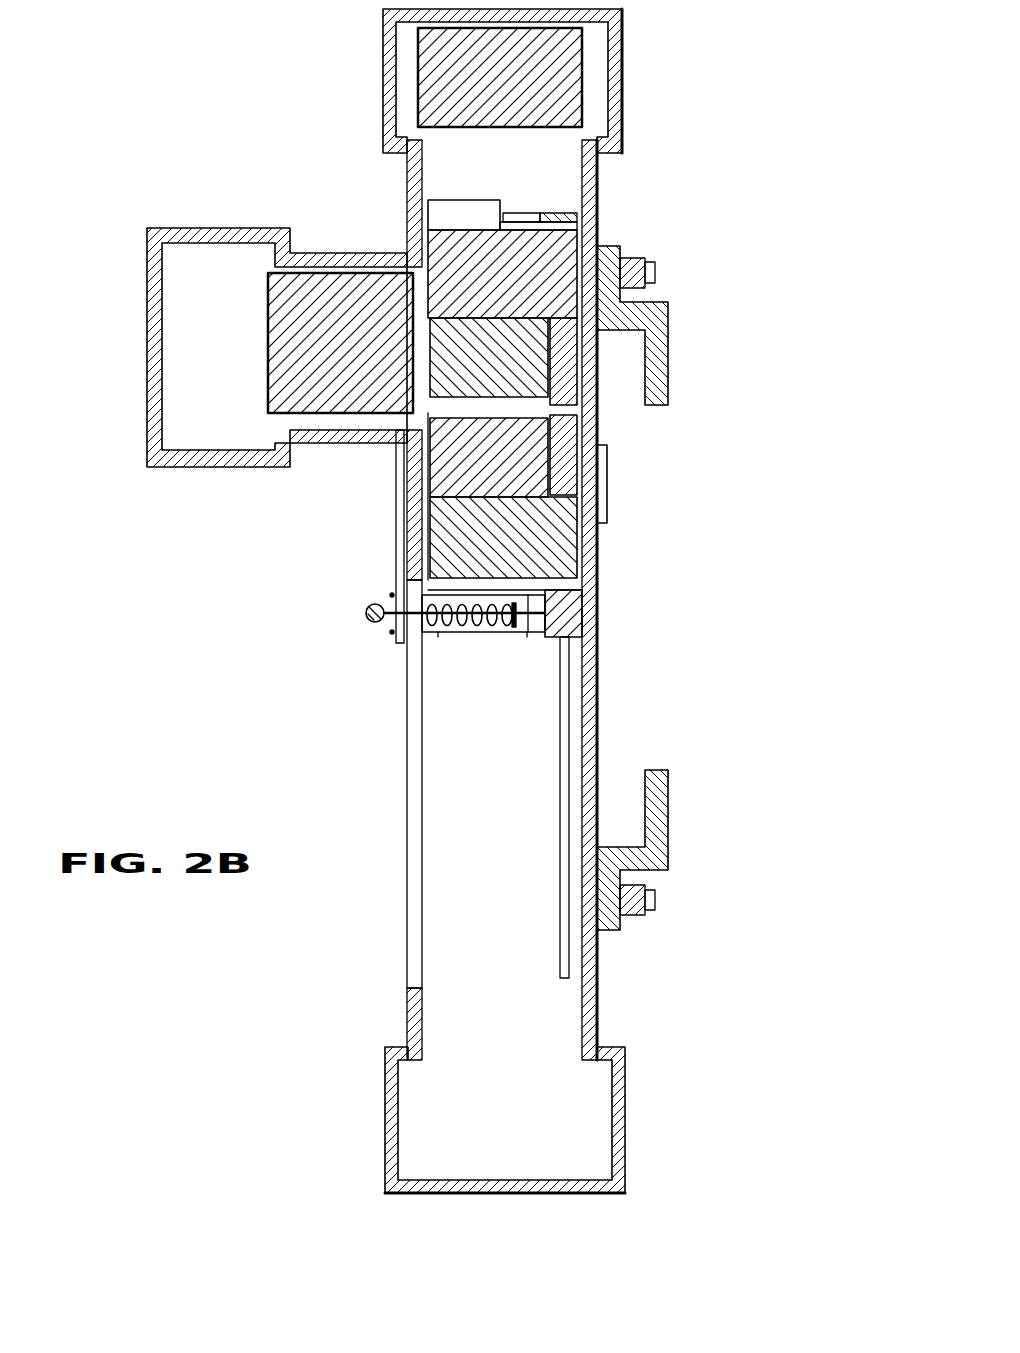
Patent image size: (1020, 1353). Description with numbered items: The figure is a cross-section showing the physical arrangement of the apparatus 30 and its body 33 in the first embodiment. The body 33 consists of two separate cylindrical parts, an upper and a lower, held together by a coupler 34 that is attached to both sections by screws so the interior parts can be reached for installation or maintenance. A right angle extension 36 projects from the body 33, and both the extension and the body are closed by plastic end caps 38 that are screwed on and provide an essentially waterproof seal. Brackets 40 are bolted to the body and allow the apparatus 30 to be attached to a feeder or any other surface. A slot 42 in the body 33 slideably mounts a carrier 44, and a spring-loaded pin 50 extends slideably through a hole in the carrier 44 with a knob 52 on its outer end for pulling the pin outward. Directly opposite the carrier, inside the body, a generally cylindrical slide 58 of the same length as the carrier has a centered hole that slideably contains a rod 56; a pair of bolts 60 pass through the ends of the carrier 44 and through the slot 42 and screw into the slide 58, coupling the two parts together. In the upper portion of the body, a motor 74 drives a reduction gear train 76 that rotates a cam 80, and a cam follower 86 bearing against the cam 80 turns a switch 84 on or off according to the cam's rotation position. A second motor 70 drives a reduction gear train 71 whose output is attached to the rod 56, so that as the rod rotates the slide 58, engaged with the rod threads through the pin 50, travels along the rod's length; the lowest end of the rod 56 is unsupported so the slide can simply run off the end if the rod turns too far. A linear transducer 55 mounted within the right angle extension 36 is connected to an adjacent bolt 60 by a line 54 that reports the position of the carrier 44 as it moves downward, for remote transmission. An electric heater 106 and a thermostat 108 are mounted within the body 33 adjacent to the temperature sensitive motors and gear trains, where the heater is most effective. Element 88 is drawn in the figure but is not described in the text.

The apparatus 30 is at (561, 600).
The body 33 is at (622, 702).
The coupler 34 is at (629, 486).
The right angle extension 36 is at (326, 228).
The end caps 38 is at (649, 95).
The brackets 40 is at (705, 354).
The slot 42 is at (418, 898).
The carrier 44 is at (392, 628).
The pin 50 is at (455, 630).
The knob 52 is at (343, 615).
The line 54 is at (369, 538).
The linear transducer 55 is at (313, 311).
The rod 56 is at (565, 855).
The slide 58 is at (560, 612).
The bolts 60 is at (373, 581).
The motor 70 is at (455, 465).
The reduction gear train 71 is at (525, 543).
The motor 74 is at (525, 380).
The reduction gear train 76 is at (537, 247).
The cam 80 is at (577, 216).
The switch 84 is at (467, 211).
The cam follower 86 is at (527, 213).
The magnet block 88 is at (553, 58).
The electric heater 106 is at (557, 356).
The thermostat 108 is at (560, 437).